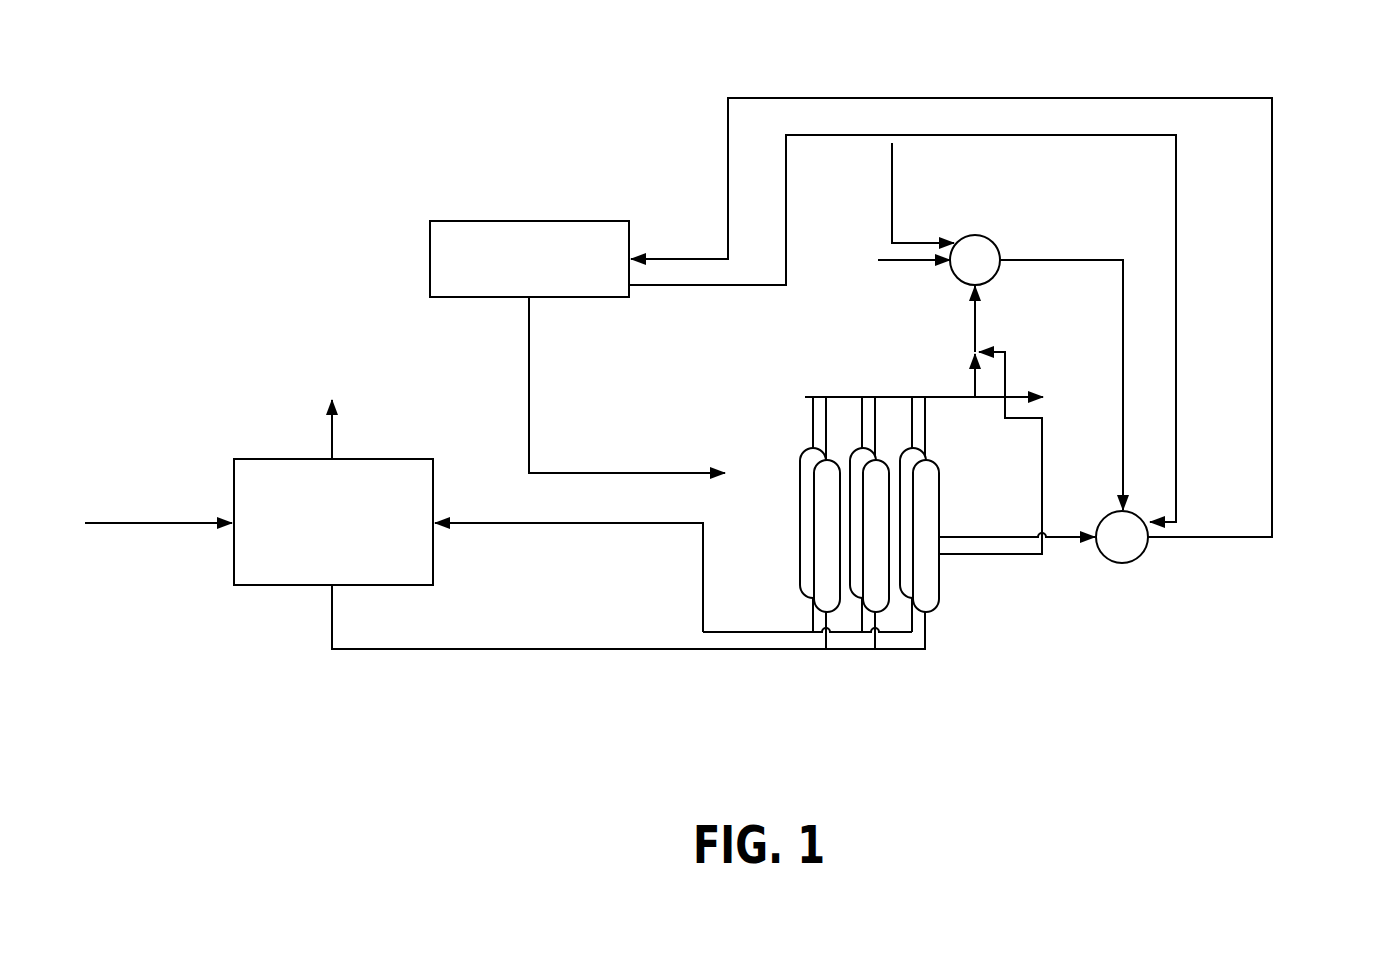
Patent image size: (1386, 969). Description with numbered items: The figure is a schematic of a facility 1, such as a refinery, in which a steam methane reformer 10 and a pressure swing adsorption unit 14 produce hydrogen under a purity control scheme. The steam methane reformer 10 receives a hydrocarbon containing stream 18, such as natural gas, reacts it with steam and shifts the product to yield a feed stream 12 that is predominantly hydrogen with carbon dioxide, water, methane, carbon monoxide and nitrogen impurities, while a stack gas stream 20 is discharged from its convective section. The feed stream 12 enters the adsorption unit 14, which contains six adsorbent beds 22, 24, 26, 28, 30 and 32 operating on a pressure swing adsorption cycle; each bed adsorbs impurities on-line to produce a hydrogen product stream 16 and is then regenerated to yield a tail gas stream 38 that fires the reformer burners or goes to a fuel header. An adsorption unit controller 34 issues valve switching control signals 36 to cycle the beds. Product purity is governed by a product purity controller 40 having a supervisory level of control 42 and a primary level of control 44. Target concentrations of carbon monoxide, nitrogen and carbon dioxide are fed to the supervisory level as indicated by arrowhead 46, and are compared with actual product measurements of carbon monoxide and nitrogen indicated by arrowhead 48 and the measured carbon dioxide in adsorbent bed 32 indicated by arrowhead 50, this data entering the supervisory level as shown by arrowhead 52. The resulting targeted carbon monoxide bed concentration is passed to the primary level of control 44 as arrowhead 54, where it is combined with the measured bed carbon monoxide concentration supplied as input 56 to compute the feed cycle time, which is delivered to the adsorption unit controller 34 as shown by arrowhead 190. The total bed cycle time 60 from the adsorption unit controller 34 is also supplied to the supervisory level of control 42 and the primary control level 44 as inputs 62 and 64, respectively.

The facility 1 is at (575, 128).
The steam methane reformer 10 is at (380, 452).
The feed stream 12 is at (553, 650).
The pressure swing adsorption unit 14 is at (854, 555).
The hydrogen product stream 16 is at (1017, 393).
The hydrocarbon containing stream 18 is at (150, 522).
The stack gas stream 20 is at (330, 435).
The adsorbent bed 22 is at (823, 505).
The adsorbent bed 24 is at (800, 477).
The adsorbent bed 26 is at (856, 458).
The adsorbent bed 28 is at (880, 598).
The adsorbent bed 30 is at (905, 457).
The adsorbent bed 32 is at (930, 490).
The adsorption unit controller 34 is at (470, 220).
The control signals 36 is at (617, 472).
The tail gas stream 38 is at (585, 525).
The product purity controller 40 is at (1004, 370).
The supervisory level of control 42 is at (956, 279).
The primary level of control 44 is at (1096, 554).
The targets input 46 is at (882, 262).
The product impurity measurements 48 is at (975, 383).
The adsorbent bed carbon dioxide measurement 50 is at (1042, 470).
The concentration data input 52 is at (978, 322).
The targeted bed concentration input 54 is at (1123, 340).
The carbon monoxide measurement input 56 is at (985, 536).
The total bed cycle time 60 is at (728, 288).
The total bed cycle time input 62 is at (891, 178).
The total bed cycle time input 64 is at (1176, 442).
The feed cycle time output 190 is at (1272, 392).